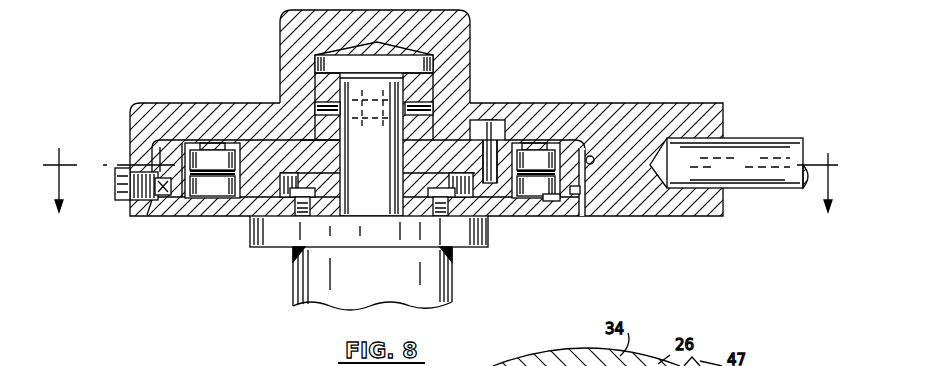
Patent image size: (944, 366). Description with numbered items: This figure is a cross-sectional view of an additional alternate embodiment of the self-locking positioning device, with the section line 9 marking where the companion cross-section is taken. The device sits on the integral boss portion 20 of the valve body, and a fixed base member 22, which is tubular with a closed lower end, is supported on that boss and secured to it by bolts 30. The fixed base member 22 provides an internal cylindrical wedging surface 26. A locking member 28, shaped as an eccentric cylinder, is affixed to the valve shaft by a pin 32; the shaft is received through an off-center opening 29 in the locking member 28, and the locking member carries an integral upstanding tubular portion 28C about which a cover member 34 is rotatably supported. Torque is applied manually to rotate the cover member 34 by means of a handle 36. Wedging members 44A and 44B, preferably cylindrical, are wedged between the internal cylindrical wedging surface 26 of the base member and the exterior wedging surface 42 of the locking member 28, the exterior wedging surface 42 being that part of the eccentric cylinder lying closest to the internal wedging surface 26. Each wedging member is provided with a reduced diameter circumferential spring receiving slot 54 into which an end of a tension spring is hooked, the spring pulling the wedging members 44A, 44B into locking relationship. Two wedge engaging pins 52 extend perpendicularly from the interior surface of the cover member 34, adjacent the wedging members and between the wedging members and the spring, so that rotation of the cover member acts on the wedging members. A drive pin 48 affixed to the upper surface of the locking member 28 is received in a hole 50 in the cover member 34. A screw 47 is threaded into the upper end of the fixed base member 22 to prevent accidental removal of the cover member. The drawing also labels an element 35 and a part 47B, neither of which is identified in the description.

The section line 9 is at (437, 193).
The boss portion 20 is at (297, 270).
The fixed base member 22 is at (232, 212).
The internal cylindrical wedging surface 26 is at (178, 143).
The locking member 28 is at (443, 139).
The upstanding tubular portion 28C is at (432, 78).
The off-center opening 29 is at (340, 158).
The bolts 30 is at (322, 190).
The pin 32 is at (413, 113).
The cover member 34 is at (605, 115).
The sleeve 35 is at (318, 88).
The handle 36 is at (776, 152).
The exterior wedging surface 42 is at (235, 152).
The wedging member 44A is at (200, 190).
The wedging member 44B is at (560, 200).
The screw 47 is at (114, 190).
The screw plug 47B is at (147, 215).
The drive pin 48 is at (505, 138).
The hole 50 is at (489, 120).
The wedge engaging pins 52 is at (208, 142).
The spring receiving slot 54 is at (238, 181).